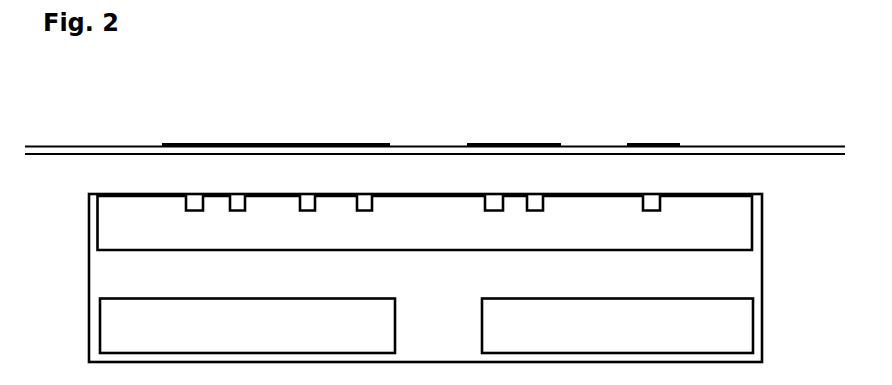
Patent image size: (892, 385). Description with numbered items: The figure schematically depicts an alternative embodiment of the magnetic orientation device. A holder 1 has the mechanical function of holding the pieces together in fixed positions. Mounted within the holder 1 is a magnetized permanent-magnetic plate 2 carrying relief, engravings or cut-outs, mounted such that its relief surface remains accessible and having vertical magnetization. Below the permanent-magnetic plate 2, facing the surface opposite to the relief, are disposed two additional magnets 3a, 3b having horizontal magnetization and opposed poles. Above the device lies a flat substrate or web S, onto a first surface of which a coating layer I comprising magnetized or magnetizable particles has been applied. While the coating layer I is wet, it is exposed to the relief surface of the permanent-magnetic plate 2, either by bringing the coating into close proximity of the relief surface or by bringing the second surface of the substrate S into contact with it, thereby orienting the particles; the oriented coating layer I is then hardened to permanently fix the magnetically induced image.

The holder 1 is at (86, 288).
The permanent-magnetic plate 2 is at (425, 223).
The additional magnet 3a is at (247, 326).
The additional magnet 3b is at (617, 326).
The coating layer I is at (243, 140).
The substrate S is at (753, 152).